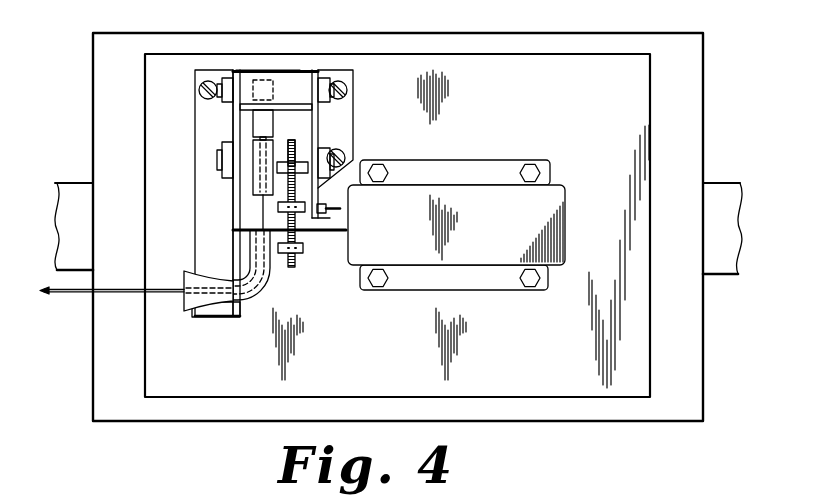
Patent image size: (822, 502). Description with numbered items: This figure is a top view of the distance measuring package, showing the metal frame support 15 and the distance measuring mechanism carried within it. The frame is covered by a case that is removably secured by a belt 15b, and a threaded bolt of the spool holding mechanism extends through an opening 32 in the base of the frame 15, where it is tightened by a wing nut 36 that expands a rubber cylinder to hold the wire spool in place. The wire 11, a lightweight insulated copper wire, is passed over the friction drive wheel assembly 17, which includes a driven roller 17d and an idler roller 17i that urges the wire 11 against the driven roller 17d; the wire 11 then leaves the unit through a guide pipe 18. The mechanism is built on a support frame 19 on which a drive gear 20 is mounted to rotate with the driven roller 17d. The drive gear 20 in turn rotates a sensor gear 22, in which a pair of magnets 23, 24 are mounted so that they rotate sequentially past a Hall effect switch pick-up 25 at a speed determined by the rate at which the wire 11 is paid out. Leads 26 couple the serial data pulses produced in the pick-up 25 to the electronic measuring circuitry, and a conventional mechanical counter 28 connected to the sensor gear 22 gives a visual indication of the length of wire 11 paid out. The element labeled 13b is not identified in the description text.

The wire 11 is at (75, 294).
The housing wall 13b is at (589, 137).
The metal frame support 15 is at (107, 40).
The belt 15b is at (72, 168).
The friction drive wheel assembly 17 is at (243, 64).
The driven roller 17d is at (253, 150).
The idler roller 17i is at (264, 80).
The guide pipe 18 is at (188, 305).
The support frame 19 is at (234, 70).
The drive gear 20 is at (297, 142).
The sensor gear 22 is at (297, 236).
The magnet 23 is at (301, 206).
The magnet 24 is at (295, 258).
The Hall effect switch pick-up 25 is at (320, 222).
The leads 26 is at (326, 212).
The mechanical counter 28 is at (473, 193).
The opening 32 is at (340, 1).
The wing nut 36 is at (262, 35).